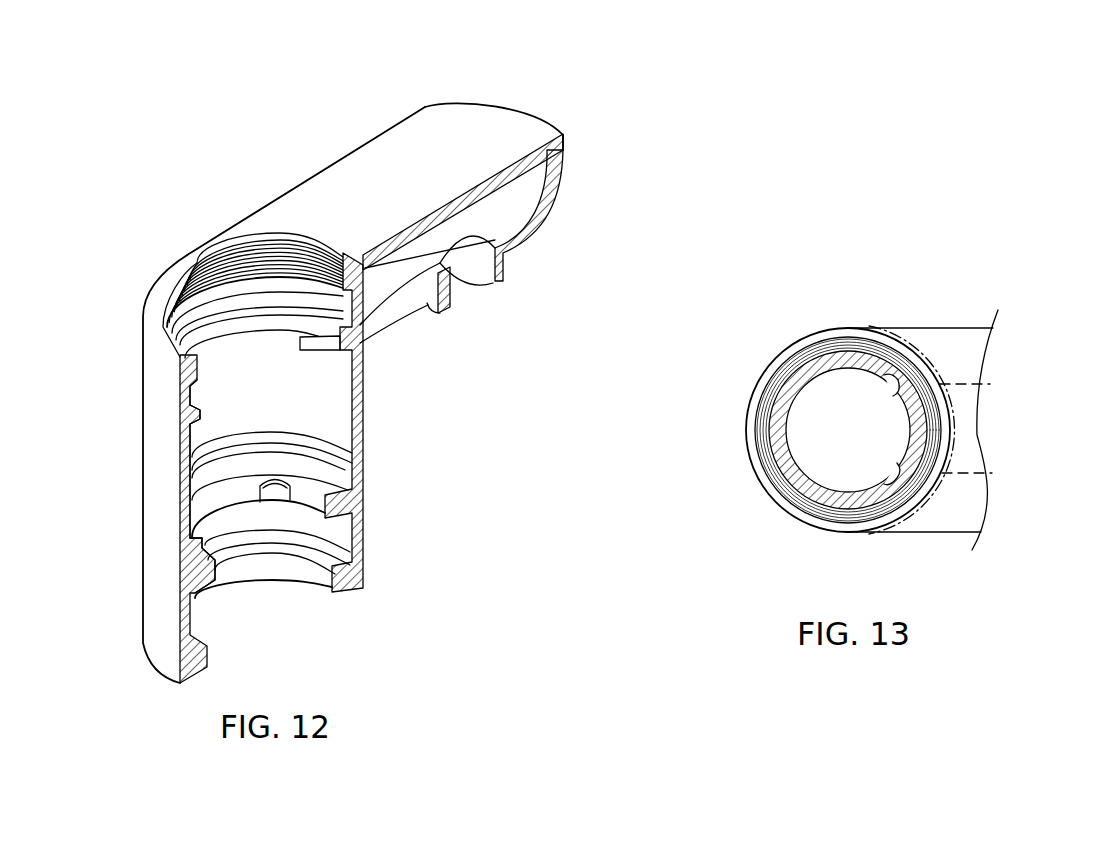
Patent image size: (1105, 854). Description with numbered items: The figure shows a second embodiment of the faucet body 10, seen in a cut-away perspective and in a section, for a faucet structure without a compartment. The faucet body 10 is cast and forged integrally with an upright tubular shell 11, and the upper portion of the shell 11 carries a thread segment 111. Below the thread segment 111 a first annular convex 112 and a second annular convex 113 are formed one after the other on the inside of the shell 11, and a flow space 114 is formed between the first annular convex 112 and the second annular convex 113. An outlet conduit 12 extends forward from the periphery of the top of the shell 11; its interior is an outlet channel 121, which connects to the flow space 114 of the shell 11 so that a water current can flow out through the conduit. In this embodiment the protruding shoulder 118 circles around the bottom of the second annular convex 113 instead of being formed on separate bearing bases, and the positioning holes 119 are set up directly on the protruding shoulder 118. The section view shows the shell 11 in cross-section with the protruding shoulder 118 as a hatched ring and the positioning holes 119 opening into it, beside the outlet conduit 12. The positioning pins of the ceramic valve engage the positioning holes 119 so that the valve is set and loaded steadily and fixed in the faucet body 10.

In FIG. 12, the faucet body 10 is at (147, 661).
In FIG. 12, the upright tubular shell 11 is at (150, 376).
In FIG. 13, the upright tubular shell 11 is at (785, 352).
In FIG. 12, the outlet conduit 12 is at (493, 128).
In FIG. 13, the outlet conduit 12 is at (975, 430).
In FIG. 12, the thread segment 111 is at (192, 280).
In FIG. 12, the first annular convex 112 is at (190, 412).
In FIG. 12, the second annular convex 113 is at (178, 544).
In FIG. 12, the flow space 114 is at (190, 484).
In FIG. 12, the protruding shoulder 118 is at (228, 488).
In FIG. 13, the protruding shoulder 118 is at (783, 460).
In FIG. 12, the positioning hole 119 is at (274, 490).
In FIG. 13, the positioning hole 119 is at (893, 374).
In FIG. 12, the outlet channel 121 is at (497, 217).